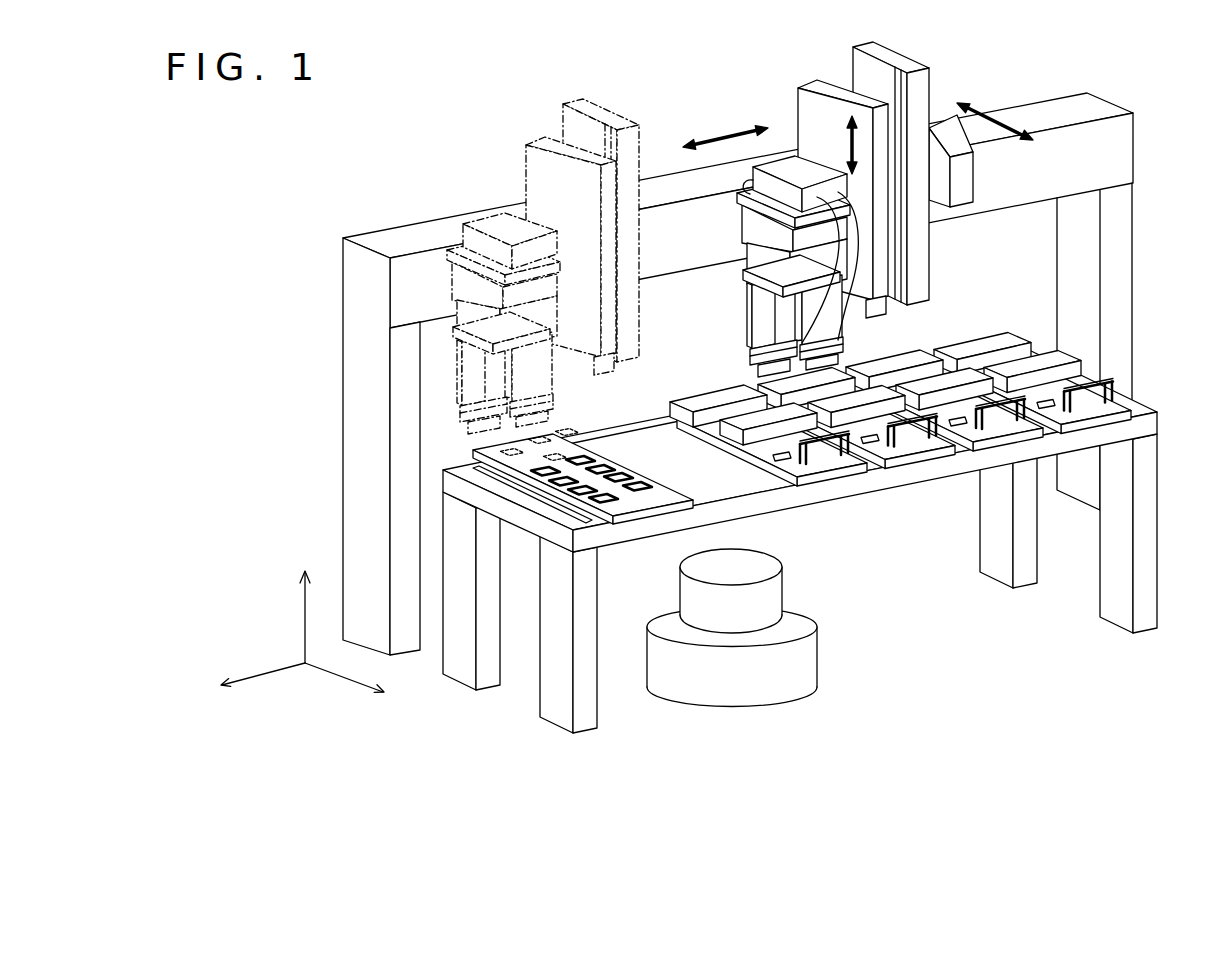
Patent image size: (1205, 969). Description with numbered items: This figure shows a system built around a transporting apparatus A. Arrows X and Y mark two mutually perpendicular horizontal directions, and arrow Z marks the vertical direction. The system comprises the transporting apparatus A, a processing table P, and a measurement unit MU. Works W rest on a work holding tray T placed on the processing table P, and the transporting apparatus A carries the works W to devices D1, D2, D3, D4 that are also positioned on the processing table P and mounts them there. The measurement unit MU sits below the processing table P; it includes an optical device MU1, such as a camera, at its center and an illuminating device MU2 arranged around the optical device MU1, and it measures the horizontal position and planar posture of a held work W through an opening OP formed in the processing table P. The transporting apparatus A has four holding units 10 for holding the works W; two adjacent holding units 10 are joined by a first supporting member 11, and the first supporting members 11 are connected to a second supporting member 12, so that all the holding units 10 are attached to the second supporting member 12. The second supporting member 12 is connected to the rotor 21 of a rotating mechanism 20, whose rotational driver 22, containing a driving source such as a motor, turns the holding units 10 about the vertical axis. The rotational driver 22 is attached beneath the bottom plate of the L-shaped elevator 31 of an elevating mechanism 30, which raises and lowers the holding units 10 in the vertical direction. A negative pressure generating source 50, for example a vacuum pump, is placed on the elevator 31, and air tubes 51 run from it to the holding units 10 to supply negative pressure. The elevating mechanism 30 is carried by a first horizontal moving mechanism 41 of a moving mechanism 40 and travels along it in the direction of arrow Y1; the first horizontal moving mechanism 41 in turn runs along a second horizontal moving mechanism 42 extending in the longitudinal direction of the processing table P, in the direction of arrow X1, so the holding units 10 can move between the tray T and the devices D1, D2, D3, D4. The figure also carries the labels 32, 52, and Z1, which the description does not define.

The transporting apparatus A is at (672, 100).
The holding unit 10 is at (651, 332).
The first supporting member 11 is at (752, 352).
The second supporting member 12 is at (752, 285).
The rotating mechanism 20 is at (645, 297).
The rotor 21 is at (752, 258).
The rotational driver 22 is at (750, 222).
The elevating mechanism 30 is at (704, 180).
The elevator 31 is at (820, 113).
The Z-axis rail 32 is at (848, 68).
The moving mechanism 40 is at (738, 374).
The first horizontal moving mechanism 41 is at (960, 192).
The second horizontal moving mechanism 42 is at (943, 215).
The negative pressure generating source 50 is at (800, 163).
The air tube 51 is at (740, 186).
The cable 52 is at (873, 306).
The work holding tray T is at (490, 452).
The work W is at (580, 487).
The opening OP is at (680, 462).
The processing table P is at (922, 473).
The device D1 is at (803, 476).
The device D2 is at (890, 460).
The device D3 is at (977, 438).
The device D4 is at (1140, 412).
The measurement unit MU is at (768, 627).
The optical device MU1 is at (777, 593).
The illuminating device MU2 is at (803, 619).
The arrow X1 is at (725, 132).
The arrow Y1 is at (995, 112).
The Z direction movement Z1 is at (838, 145).
The arrow X is at (263, 666).
The arrow Y is at (344, 676).
The arrow Z is at (312, 610).